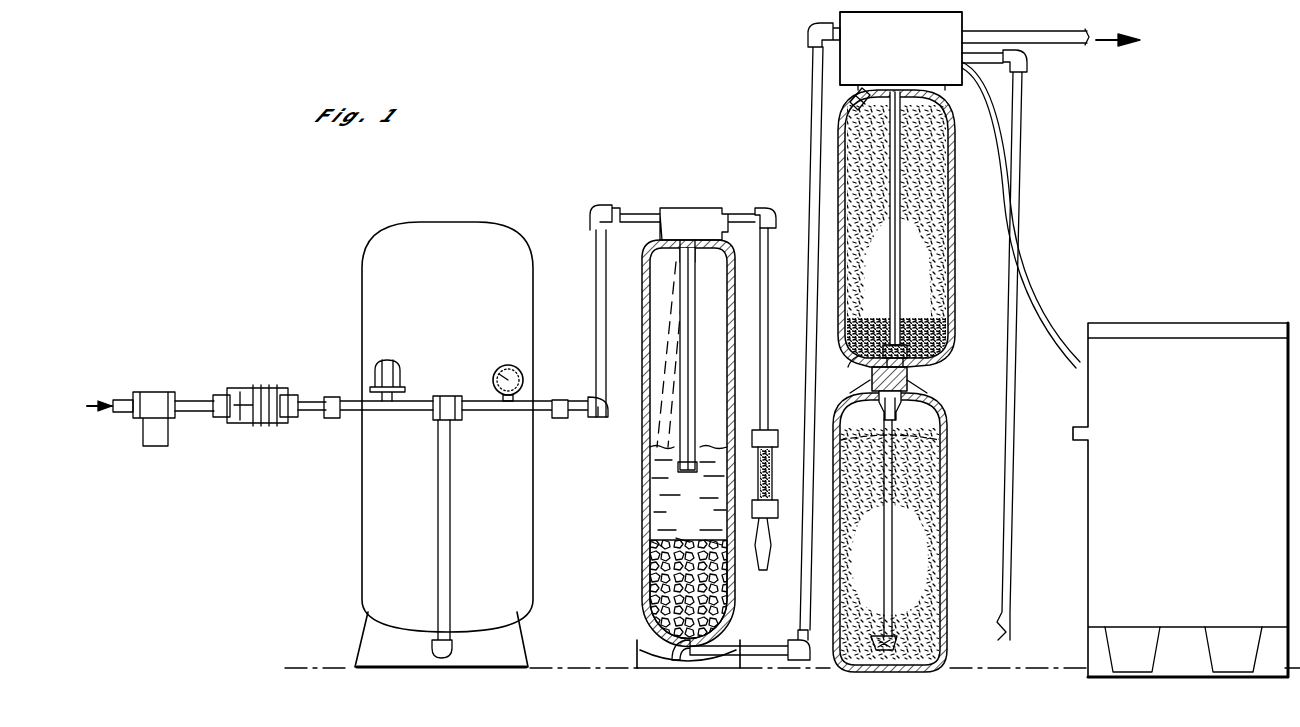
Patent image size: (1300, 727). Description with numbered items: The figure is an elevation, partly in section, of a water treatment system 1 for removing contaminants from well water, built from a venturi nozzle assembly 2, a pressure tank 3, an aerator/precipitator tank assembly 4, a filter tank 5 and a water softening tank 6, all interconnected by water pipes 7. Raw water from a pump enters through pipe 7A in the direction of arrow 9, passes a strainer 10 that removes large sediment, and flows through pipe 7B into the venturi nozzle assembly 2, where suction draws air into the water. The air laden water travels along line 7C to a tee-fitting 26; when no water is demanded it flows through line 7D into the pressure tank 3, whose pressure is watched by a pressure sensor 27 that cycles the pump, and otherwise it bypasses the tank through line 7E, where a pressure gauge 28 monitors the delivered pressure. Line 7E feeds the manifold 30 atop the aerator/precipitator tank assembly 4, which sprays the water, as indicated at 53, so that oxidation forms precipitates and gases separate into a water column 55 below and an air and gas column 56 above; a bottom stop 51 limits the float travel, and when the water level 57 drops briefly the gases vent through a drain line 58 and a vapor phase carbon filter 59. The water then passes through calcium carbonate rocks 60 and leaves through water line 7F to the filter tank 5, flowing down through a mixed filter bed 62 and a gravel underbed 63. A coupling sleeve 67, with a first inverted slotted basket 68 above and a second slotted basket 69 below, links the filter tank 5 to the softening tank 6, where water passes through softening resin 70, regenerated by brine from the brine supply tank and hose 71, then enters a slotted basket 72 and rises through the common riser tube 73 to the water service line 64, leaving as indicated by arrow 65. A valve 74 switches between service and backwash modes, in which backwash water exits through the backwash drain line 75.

The water treatment system 1 is at (708, 184).
The venturi nozzle assembly 2 is at (263, 388).
The pressure tank 3 is at (457, 284).
The aerator/precipitator tank assembly 4 is at (680, 246).
The filter tank 5 is at (890, 226).
The water softening tank 6 is at (913, 550).
The water pipes 7 is at (586, 258).
The pipe 7A is at (126, 400).
The pipe 7B is at (199, 400).
The line 7C is at (346, 397).
The line 7D is at (438, 553).
The line 7E is at (520, 412).
The water line 7F is at (762, 658).
The arrow 9 is at (96, 410).
The strainer 10 is at (162, 434).
The tee-fitting 26 is at (446, 396).
The pressure sensor 27 is at (393, 360).
The pressure gauge 28 is at (507, 364).
The manifold 30 is at (710, 212).
The bottom stop 51 is at (678, 463).
The spray 53 is at (655, 318).
The water column 55 is at (674, 527).
The air and gas column 56 is at (700, 389).
The water level 57 is at (648, 428).
The drain line 58 is at (770, 358).
The vapor phase carbon filter 59 is at (770, 472).
The calcium carbonate rocks 60 is at (655, 587).
The mixed filter bed 62 is at (940, 228).
The gravel underbed 63 is at (950, 322).
The water service line 64 is at (1025, 33).
The arrow 65 is at (1110, 38).
The coupling sleeve 67 is at (908, 383).
The first inverted slotted basket 68 is at (850, 350).
The second slotted basket 69 is at (902, 405).
The softening resin 70 is at (930, 602).
The brine supply tank and supply hose 71 is at (1062, 290).
The slotted basket 72 is at (892, 652).
The riser tube 73 is at (885, 573).
The valve 74 is at (848, 22).
The backwash drain line 75 is at (1018, 574).